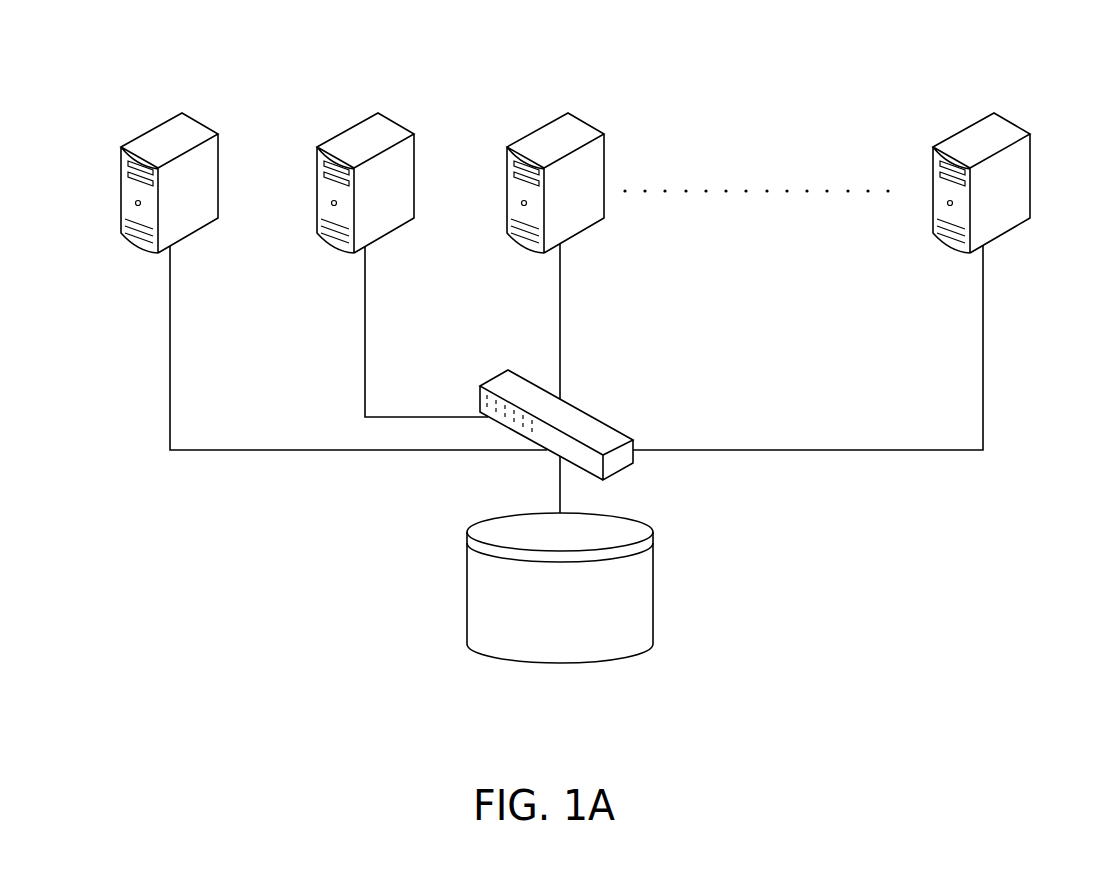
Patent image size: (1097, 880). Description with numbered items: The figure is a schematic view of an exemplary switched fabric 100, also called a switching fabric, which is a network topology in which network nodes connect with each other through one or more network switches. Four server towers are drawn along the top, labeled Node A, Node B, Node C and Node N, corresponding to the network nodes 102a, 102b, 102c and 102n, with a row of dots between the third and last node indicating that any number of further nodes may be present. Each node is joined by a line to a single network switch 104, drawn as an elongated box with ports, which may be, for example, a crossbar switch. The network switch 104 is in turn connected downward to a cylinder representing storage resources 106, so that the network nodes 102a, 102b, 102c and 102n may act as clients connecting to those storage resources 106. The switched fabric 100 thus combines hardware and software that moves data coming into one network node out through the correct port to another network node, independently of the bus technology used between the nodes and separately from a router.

The switched fabric 100 is at (793, 78).
The network node 102a is at (203, 123).
The network node 102b is at (390, 123).
The network node 102c is at (587, 123).
The network node 102n is at (1012, 123).
The network switch 104 is at (590, 410).
The storage resources 106 is at (656, 583).